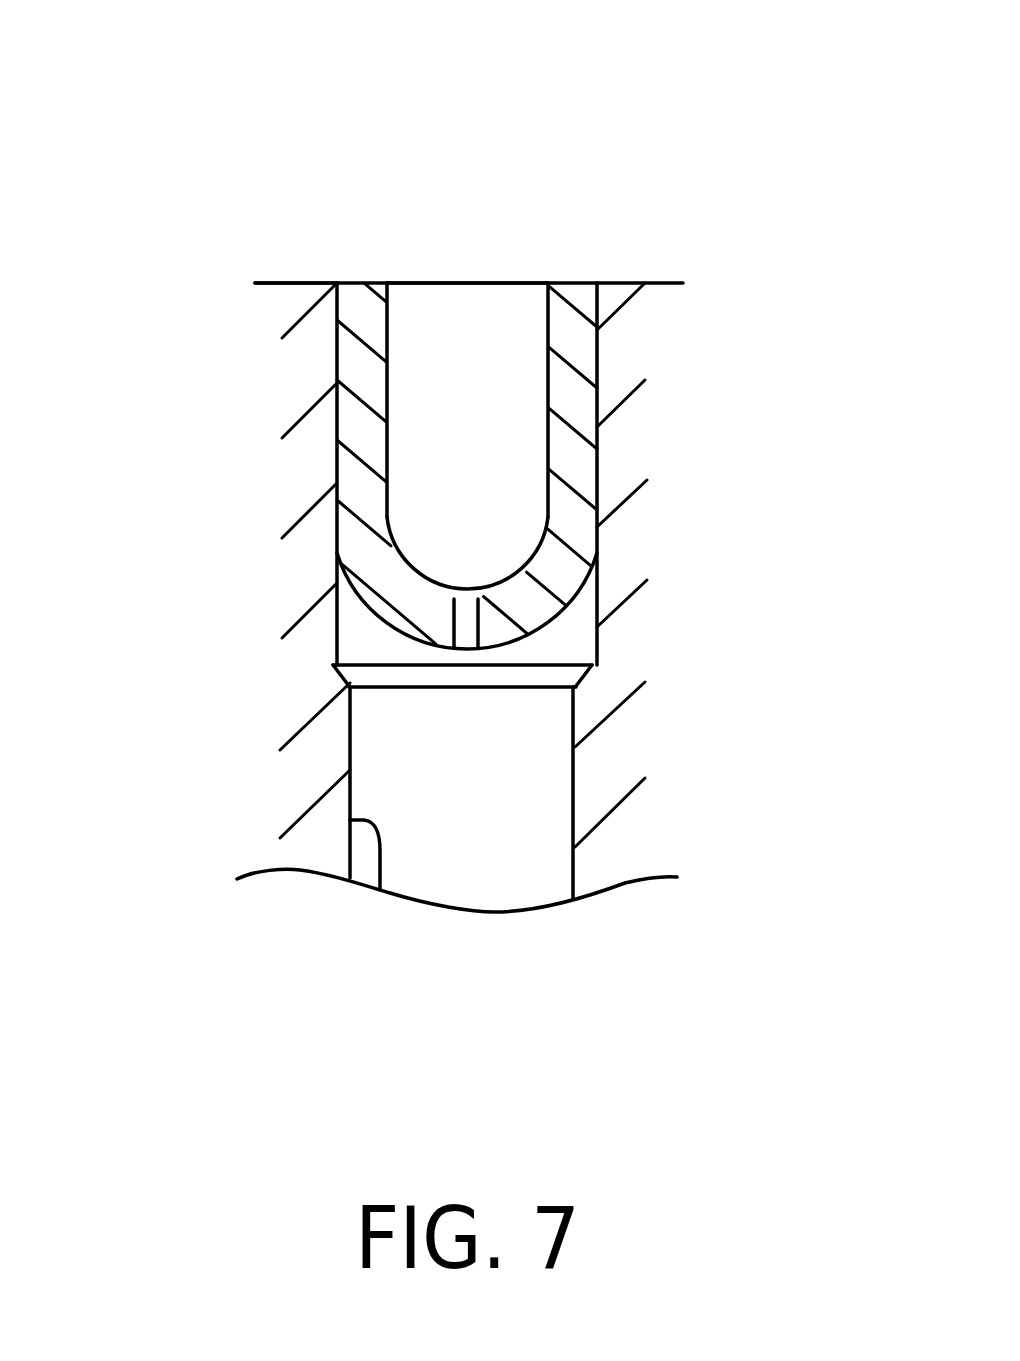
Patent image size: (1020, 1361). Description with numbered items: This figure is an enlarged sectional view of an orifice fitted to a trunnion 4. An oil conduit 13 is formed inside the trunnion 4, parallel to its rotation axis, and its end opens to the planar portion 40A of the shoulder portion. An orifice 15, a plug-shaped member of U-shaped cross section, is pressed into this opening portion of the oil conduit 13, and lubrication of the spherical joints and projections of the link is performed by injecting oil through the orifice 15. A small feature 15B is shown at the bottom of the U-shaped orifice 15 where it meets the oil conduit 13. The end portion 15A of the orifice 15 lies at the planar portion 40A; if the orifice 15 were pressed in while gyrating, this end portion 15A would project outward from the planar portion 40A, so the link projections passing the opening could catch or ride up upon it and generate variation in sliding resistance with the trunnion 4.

The trunnion 4 is at (240, 681).
The oil conduit 13 is at (379, 880).
The orifice 15 is at (550, 403).
The end portion 15A is at (362, 283).
The slot in bottom of cup-shaped member 15B is at (463, 650).
The planar portion 40A is at (281, 245).